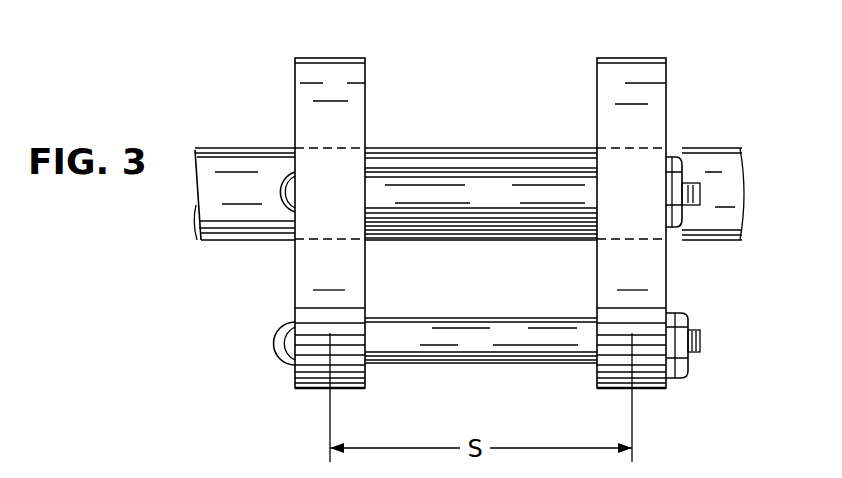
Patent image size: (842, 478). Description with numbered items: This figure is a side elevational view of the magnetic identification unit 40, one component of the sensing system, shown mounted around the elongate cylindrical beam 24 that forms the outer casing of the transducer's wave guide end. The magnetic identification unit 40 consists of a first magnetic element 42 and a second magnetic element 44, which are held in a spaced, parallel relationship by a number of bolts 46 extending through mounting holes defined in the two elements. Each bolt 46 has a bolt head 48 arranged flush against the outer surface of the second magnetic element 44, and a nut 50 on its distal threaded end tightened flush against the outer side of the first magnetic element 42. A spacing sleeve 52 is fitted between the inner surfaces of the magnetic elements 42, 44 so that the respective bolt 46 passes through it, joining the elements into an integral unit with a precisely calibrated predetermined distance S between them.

The elongate cylindrical beam 24 is at (250, 147).
The magnetic identification unit 40 is at (682, 82).
The first magnetic element 42 is at (327, 57).
The second magnetic element 44 is at (620, 57).
The bolt 46 is at (700, 193).
The bolt head 48 is at (284, 196).
The nut 50 is at (675, 167).
The spacing sleeve 52 is at (478, 172).